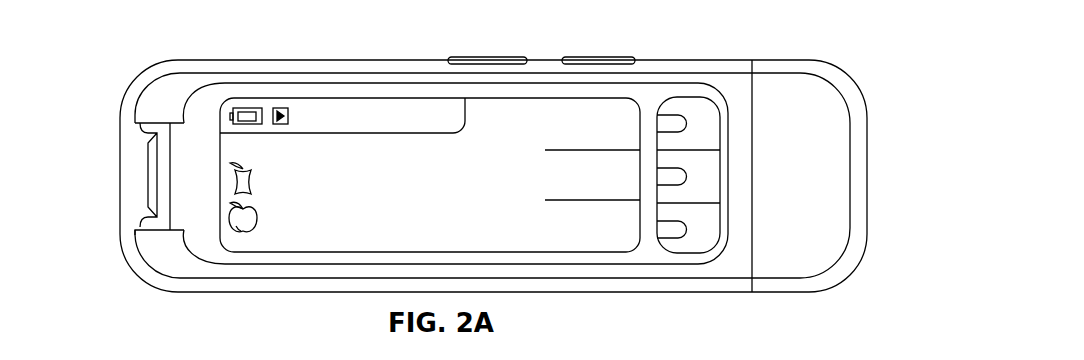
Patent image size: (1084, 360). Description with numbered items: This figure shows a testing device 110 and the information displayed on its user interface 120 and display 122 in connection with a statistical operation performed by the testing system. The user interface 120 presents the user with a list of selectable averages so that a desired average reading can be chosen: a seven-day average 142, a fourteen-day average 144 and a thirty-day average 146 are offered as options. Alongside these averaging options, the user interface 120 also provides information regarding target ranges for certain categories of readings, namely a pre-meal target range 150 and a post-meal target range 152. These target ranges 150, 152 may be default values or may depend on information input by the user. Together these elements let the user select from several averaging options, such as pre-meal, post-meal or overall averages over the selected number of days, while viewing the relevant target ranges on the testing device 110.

The testing device 110 is at (135, 61).
The user interface 120 is at (490, 130).
The display 122 is at (515, 152).
The 7-day average 142 is at (573, 108).
The 14-day average 144 is at (614, 162).
The 30-day average 146 is at (563, 237).
The pre-meal target range 150 is at (232, 183).
The post-meal target range 152 is at (230, 221).